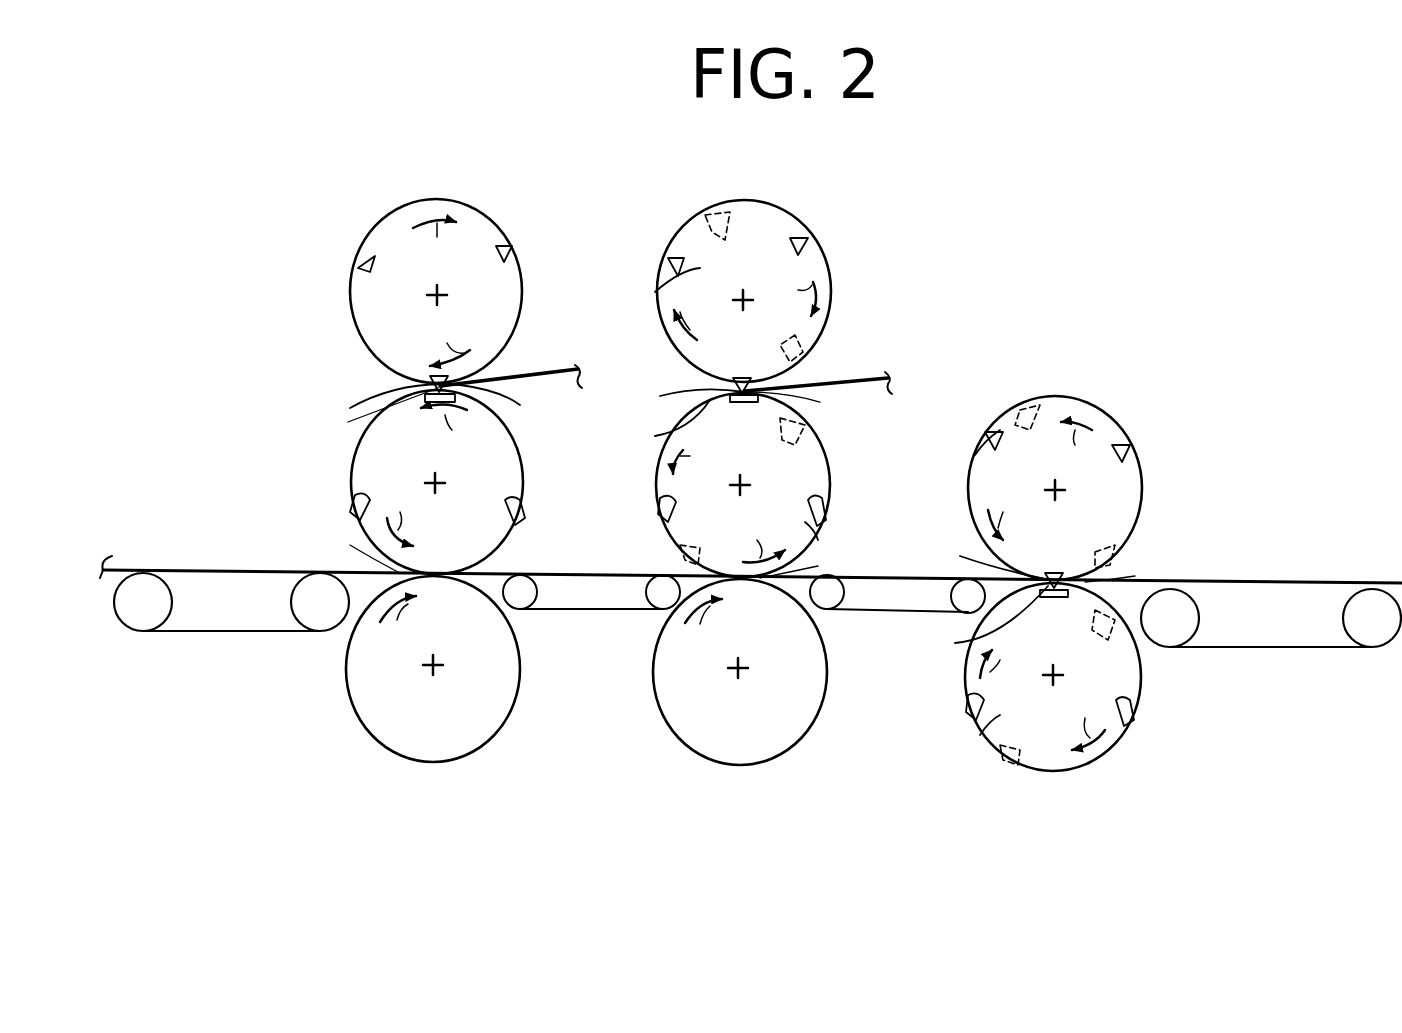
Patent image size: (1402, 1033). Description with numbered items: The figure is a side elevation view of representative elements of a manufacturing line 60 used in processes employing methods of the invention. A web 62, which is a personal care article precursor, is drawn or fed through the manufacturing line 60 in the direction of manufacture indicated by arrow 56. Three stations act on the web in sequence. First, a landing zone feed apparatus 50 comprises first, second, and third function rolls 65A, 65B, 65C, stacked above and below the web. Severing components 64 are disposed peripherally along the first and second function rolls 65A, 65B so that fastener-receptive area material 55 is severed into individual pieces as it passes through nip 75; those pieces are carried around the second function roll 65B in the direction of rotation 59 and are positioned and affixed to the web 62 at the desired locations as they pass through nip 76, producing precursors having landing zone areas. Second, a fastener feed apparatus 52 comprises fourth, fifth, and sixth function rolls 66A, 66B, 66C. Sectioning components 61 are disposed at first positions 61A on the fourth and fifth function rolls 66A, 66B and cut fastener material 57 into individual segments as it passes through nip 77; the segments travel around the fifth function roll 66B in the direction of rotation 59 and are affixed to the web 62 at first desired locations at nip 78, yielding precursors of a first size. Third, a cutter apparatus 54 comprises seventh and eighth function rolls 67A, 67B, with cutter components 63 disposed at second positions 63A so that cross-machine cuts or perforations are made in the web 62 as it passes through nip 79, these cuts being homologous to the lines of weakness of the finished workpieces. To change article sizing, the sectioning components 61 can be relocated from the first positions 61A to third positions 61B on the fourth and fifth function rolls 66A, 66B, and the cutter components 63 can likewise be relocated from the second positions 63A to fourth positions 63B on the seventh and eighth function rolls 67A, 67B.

The landing zone feed apparatus 50 is at (474, 480).
The fastener feed apparatus 52 is at (803, 470).
The cutter apparatus 54 is at (1117, 560).
The fastener-receptive area material 55 is at (512, 378).
The arrow 56 is at (262, 559).
The fastener material 57 is at (867, 378).
The direction of rotation 59 is at (747, 485).
The manufacturing line 60 is at (990, 262).
The sectioning components 61 is at (660, 290).
The first positions 61A is at (681, 242).
The third positions 61B is at (734, 202).
The web 62 is at (120, 570).
The cutter components 63 is at (982, 452).
The second positions 63A is at (994, 428).
The fourth positions 63B is at (1043, 393).
The severing components 64 is at (500, 240).
The first function roll 65A is at (522, 305).
The second function roll 65B is at (521, 462).
The third function roll 65C is at (519, 666).
The fourth function roll 66A is at (831, 277).
The fifth function roll 66B is at (830, 468).
The sixth function roll 66C is at (825, 690).
The seventh function roll 67A is at (1141, 505).
The eighth function roll 67B is at (1141, 675).
The nip 75 is at (380, 418).
The nip 76 is at (361, 546).
The nip 77 is at (801, 403).
The nip 78 is at (807, 558).
The nip 79 is at (1127, 566).